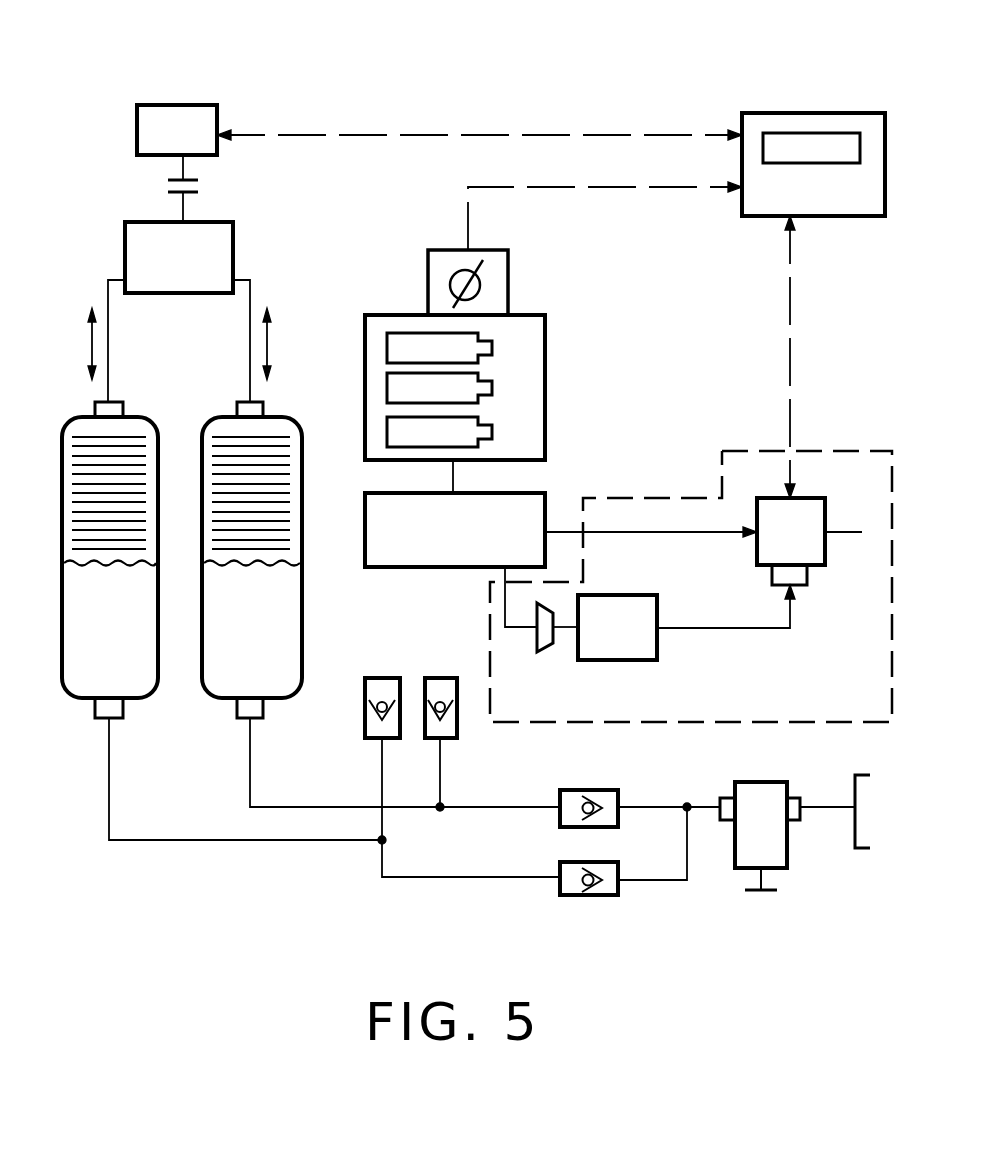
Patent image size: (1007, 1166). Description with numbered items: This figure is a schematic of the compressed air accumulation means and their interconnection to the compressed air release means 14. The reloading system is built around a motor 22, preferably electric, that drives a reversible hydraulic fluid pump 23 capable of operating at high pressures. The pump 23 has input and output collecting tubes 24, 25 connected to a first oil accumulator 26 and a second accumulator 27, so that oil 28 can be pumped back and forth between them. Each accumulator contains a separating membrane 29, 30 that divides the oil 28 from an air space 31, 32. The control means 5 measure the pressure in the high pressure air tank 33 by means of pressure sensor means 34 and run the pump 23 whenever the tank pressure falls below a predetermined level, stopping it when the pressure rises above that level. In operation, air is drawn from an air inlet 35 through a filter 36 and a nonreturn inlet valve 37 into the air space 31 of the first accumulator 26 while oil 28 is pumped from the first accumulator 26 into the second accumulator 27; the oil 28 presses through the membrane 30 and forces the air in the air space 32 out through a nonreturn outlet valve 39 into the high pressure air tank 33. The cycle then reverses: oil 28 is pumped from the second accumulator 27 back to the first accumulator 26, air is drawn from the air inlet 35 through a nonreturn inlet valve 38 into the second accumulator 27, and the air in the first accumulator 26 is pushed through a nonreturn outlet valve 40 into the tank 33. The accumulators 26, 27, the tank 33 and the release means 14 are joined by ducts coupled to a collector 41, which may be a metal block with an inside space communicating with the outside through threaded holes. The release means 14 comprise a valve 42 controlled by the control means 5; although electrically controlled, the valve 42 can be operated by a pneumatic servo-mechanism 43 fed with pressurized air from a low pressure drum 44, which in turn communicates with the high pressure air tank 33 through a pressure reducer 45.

The control means 5 is at (813, 164).
The compressed air release means 14 is at (877, 648).
The motor 22 is at (150, 125).
The reversible hydraulic fluid pump 23 is at (137, 235).
The input collecting tube 24 is at (107, 293).
The output collecting tube 25 is at (252, 293).
The first oil accumulator 26 is at (62, 437).
The second oil accumulator 27 is at (282, 428).
The oil 28 is at (222, 448).
The separating membrane 29 is at (108, 567).
The separating membrane 30 is at (258, 568).
The air space 31 is at (87, 663).
The air space 32 is at (270, 667).
The high pressure air tank 33 is at (525, 357).
The pressure sensor means 34 is at (495, 285).
The air inlet 35 is at (858, 832).
The filter 36 is at (770, 850).
The nonreturn inlet valve 37 is at (567, 885).
The nonreturn inlet valve 38 is at (563, 790).
The nonreturn outlet valve 39 is at (425, 740).
The nonreturn outlet valve 40 is at (367, 740).
The collector 41 is at (528, 515).
The valve 42 is at (815, 515).
The pneumatic servo-mechanism 43 is at (795, 578).
The low pressure drum 44 is at (657, 640).
The pressure reducer 45 is at (543, 640).